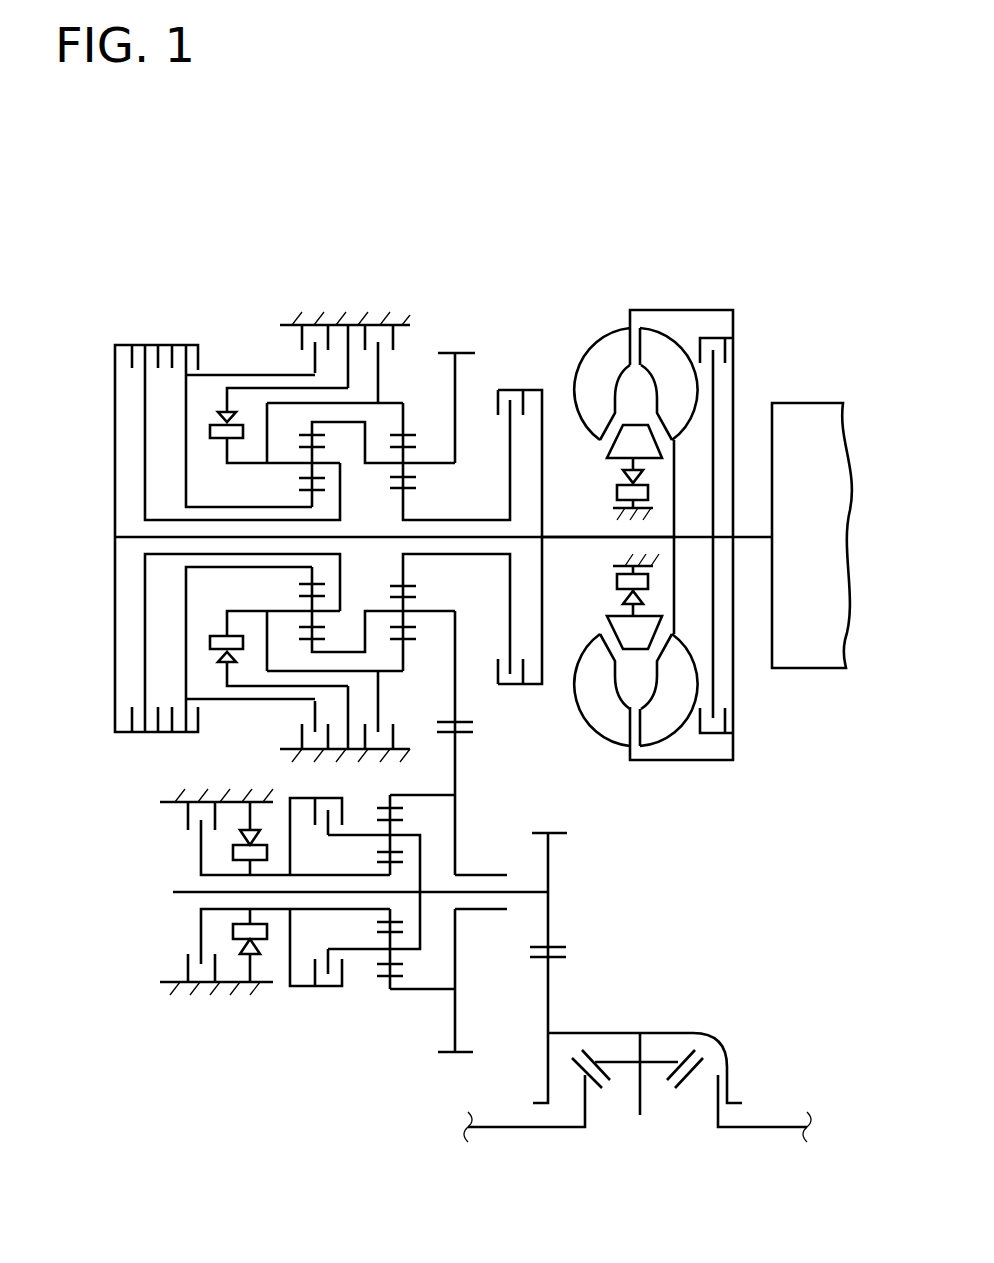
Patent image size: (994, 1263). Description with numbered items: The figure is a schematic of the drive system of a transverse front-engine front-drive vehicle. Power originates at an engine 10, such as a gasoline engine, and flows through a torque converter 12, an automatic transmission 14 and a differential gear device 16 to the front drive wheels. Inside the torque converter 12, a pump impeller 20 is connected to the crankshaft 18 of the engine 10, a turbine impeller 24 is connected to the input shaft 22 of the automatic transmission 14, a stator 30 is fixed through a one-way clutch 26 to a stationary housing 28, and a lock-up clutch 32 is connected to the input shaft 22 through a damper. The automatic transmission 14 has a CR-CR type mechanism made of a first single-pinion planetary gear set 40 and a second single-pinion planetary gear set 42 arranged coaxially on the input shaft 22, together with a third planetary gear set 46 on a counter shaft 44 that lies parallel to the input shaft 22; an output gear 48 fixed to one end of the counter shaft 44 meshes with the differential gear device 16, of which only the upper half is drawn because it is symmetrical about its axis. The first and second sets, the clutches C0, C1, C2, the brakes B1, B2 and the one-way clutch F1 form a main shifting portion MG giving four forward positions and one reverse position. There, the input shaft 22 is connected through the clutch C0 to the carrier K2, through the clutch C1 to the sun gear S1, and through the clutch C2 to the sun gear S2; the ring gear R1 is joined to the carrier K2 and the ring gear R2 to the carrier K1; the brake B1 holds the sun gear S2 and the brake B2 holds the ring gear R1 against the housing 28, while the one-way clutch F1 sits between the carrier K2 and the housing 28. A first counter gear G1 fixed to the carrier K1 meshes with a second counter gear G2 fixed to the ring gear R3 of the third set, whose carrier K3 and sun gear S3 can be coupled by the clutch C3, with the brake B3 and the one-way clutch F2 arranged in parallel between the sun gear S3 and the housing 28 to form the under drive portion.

The engine 10 is at (812, 427).
The torque converter 12 is at (710, 275).
The automatic transmission 14 is at (474, 235).
The differential gear device 16 is at (635, 983).
The crankshaft 18 is at (758, 540).
The pump impeller 20 is at (613, 353).
The input shaft 22 is at (567, 533).
The turbine impeller 24 is at (660, 722).
The one-way clutch 26 is at (628, 620).
The housing 28 is at (345, 325).
The stator 30 is at (623, 448).
The lock-up clutch 32 is at (727, 352).
The first single-pinion planetary gear set 40 is at (417, 357).
The second single-pinion planetary gear set 42 is at (286, 412).
The counter shaft 44 is at (187, 890).
The third planetary gear set 46 is at (373, 996).
The output gear 48 is at (558, 940).
The main shifting portion MG is at (100, 681).
The clutch C0 is at (140, 343).
The clutch C1 is at (515, 390).
The clutch C2 is at (188, 343).
The clutch C3 is at (335, 983).
The brake B1 is at (300, 335).
The brake B2 is at (413, 330).
The brake B3 is at (183, 967).
The one-way clutch F1 is at (212, 432).
The one-way clutch F2 is at (258, 945).
The carrier K1 is at (430, 464).
The carrier K2 is at (282, 465).
The carrier K3 is at (400, 835).
The ring gear R1 is at (412, 433).
The ring gear R2 is at (318, 430).
The ring gear R3 is at (387, 805).
The sun gear S1 is at (408, 490).
The sun gear S2 is at (302, 490).
The sun gear S3 is at (383, 866).
The first counter gear G1 is at (463, 715).
The second counter gear G2 is at (465, 1050).